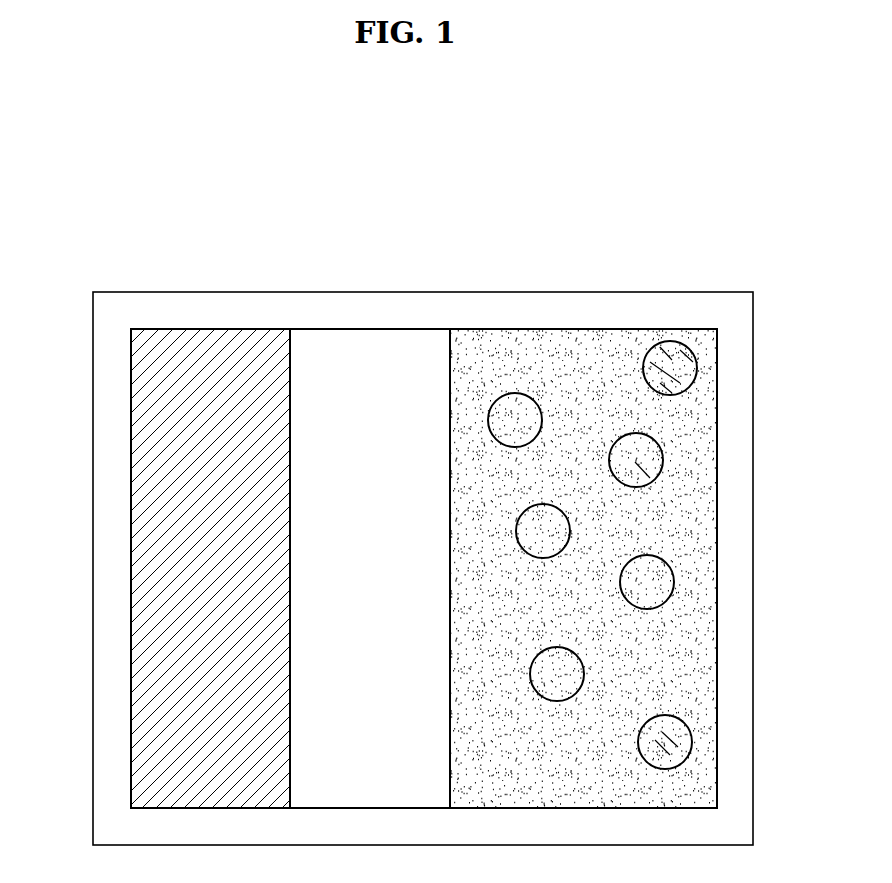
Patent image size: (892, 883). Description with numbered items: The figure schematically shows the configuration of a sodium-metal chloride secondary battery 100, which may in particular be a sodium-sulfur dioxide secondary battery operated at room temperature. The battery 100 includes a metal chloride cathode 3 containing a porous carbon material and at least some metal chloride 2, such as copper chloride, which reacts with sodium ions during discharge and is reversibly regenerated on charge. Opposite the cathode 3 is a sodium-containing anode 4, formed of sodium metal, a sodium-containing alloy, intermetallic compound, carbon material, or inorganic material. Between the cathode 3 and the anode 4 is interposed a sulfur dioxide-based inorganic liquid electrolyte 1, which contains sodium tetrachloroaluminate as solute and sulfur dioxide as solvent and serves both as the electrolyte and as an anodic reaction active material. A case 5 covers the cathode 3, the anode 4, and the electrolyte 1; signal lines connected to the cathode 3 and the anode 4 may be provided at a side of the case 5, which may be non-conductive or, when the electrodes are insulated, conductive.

The sodium-metal chloride secondary battery 100 is at (668, 182).
The sulfur dioxide-based inorganic liquid electrolyte 1 is at (365, 378).
The metal chloride 2 is at (662, 448).
The metal chloride cathode 3 is at (677, 530).
The sodium-containing anode 4 is at (175, 560).
The case 5 is at (548, 292).